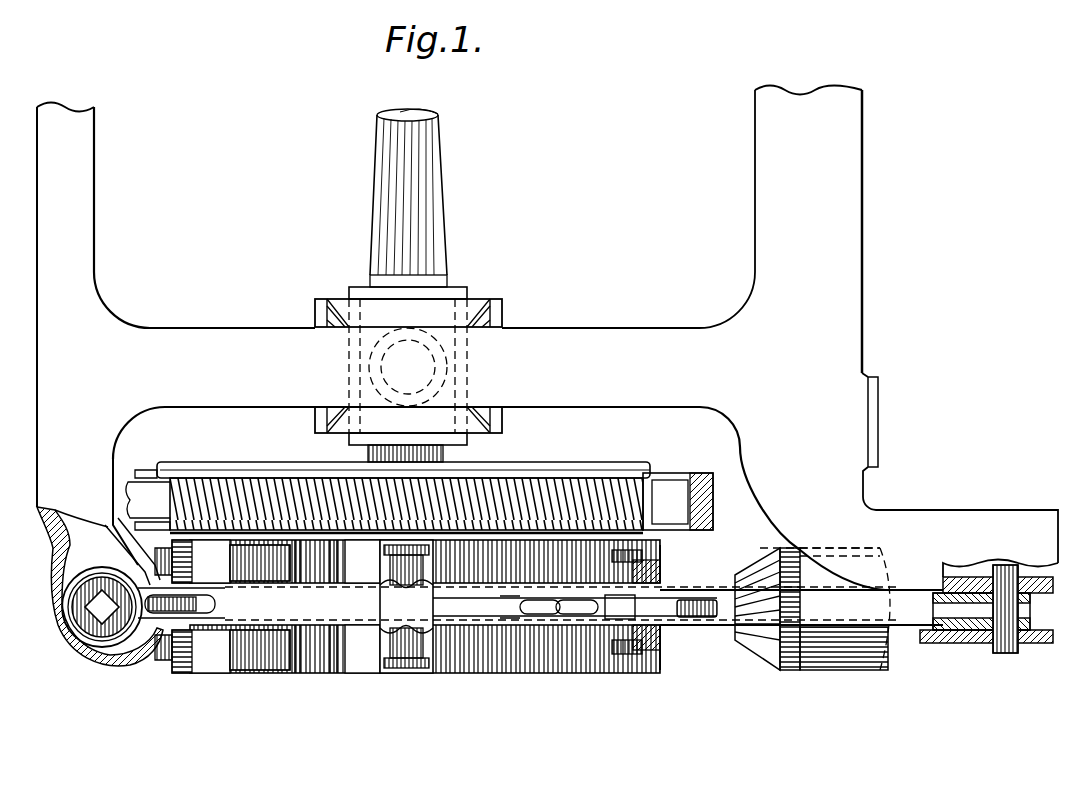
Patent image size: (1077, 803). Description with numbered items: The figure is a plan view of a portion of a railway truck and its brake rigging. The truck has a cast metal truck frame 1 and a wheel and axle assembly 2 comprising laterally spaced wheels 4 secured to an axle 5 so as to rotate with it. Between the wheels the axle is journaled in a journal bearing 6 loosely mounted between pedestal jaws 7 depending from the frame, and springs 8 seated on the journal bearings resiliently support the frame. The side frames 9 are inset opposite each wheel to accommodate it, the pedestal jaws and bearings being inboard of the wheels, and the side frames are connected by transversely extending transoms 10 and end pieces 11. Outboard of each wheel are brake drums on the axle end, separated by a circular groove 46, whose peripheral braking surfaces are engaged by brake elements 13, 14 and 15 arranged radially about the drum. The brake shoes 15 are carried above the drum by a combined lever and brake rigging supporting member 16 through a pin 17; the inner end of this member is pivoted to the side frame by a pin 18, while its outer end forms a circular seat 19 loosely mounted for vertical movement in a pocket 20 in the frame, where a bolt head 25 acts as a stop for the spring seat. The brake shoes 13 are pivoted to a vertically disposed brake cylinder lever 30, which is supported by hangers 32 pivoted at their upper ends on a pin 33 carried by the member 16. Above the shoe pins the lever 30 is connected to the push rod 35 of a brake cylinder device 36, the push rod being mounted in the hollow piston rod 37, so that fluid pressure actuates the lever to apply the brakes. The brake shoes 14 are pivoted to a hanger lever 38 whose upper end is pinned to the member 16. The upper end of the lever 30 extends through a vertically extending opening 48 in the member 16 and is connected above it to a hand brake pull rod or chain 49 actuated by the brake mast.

The truck frame 1 is at (172, 346).
The wheel and axle assembly 2 is at (380, 263).
The wheels 4 is at (548, 478).
The axle 5 is at (385, 212).
The journal bearing 6 is at (470, 293).
The pedestal jaws 7 is at (490, 305).
The springs 8 is at (436, 382).
The side frames 9 is at (632, 345).
The transoms 10 is at (838, 300).
The end pieces 11 is at (74, 203).
The brake elements 13 is at (660, 657).
The brake elements 14 is at (215, 655).
The brake elements 15 is at (371, 660).
The combined lever and brake rigging supporting member 16 is at (305, 645).
The pin 17 is at (405, 660).
The pin 18 is at (1008, 645).
The circular seat 19 is at (93, 640).
The pocket 20 is at (72, 640).
The head 25 is at (103, 612).
The brake cylinder lever 30 is at (600, 615).
The hangers 32 is at (640, 662).
The pin 33 is at (623, 657).
The push rod 35 is at (672, 598).
The brake cylinder device 36 is at (836, 650).
The hollow piston rod 37 is at (706, 605).
The hanger lever 38 is at (160, 640).
The circular groove 46 is at (275, 640).
The opening 48 is at (662, 615).
The hand brake pull rod or chain 49 is at (562, 600).